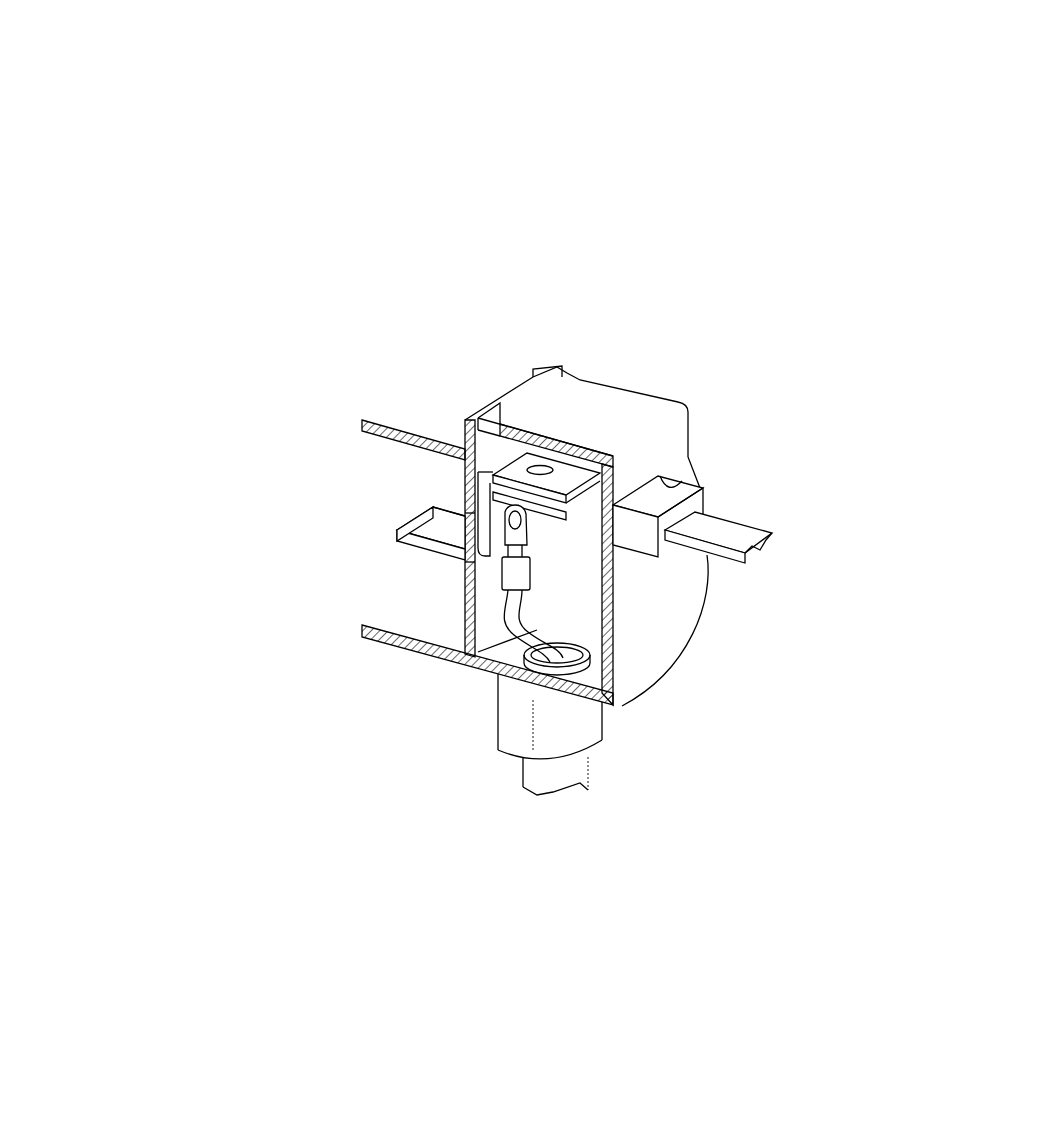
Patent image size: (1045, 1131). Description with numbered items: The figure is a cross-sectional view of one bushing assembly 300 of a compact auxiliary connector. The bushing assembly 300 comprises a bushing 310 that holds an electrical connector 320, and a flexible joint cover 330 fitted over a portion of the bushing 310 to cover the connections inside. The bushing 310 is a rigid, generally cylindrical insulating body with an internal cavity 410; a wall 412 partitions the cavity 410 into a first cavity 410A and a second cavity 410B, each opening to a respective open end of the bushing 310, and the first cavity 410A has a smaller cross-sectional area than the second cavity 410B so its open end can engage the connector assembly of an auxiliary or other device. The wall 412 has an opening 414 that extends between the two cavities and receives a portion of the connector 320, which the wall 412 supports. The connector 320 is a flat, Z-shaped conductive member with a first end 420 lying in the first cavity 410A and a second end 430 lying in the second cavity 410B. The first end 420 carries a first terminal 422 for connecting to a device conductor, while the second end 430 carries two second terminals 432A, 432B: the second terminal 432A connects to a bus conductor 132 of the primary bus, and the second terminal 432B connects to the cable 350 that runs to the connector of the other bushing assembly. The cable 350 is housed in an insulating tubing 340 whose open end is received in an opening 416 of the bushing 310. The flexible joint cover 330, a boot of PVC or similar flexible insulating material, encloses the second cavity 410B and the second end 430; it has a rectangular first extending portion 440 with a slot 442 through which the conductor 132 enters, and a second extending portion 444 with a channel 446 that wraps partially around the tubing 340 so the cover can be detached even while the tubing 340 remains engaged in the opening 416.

The bushing assembly 300 is at (275, 165).
The bushing 310 is at (507, 392).
The electrical connector 320 is at (480, 517).
The flexible joint cover 330 is at (630, 410).
The tubing 340 is at (585, 665).
The electrical cable 350 is at (547, 663).
The conductor 132 is at (750, 537).
The cavity 410 is at (503, 652).
The first cavity 410A is at (455, 629).
The second cavity 410B is at (597, 614).
The wall 412 is at (466, 633).
The opening 414 is at (462, 580).
The opening 416 is at (603, 691).
The first end 420 is at (407, 492).
The first terminal 422 is at (443, 517).
The second end 430 is at (505, 468).
The second terminal 432A is at (560, 468).
The second terminal 432B is at (520, 522).
The first extending portion 440 is at (673, 490).
The slot 442 is at (700, 522).
The second extending portion 444 is at (587, 728).
The channel 446 is at (561, 790).